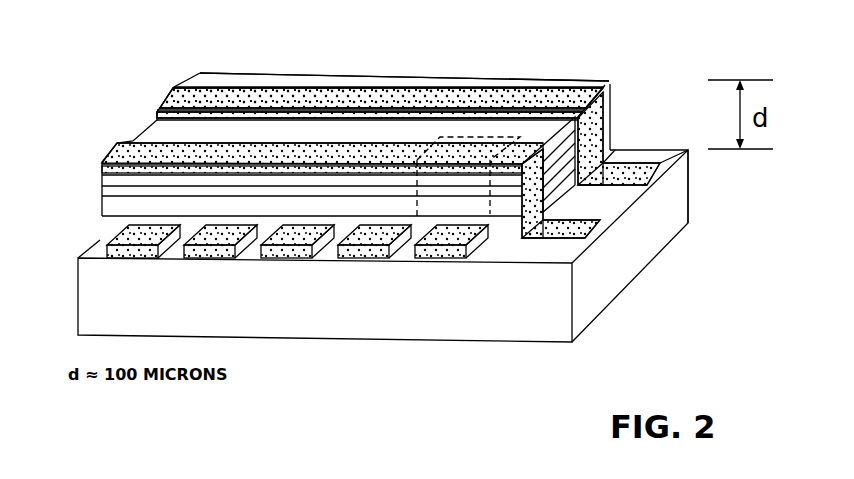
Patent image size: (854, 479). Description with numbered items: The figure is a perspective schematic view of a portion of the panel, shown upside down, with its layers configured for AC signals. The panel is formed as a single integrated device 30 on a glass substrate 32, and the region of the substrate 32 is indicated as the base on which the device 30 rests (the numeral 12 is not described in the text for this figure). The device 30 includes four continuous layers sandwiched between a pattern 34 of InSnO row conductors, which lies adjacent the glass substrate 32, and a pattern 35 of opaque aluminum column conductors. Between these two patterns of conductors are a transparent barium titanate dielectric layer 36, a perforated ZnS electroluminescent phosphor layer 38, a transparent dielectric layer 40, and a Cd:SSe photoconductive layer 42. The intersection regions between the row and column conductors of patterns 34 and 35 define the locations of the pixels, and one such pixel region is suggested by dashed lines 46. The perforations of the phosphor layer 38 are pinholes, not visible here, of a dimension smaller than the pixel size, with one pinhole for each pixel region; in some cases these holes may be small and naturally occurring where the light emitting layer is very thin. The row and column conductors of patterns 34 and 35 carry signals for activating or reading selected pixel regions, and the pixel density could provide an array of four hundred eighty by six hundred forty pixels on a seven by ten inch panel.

The substrate 12 is at (374, 340).
The integrated device 30 is at (673, 60).
The glass substrate 32 is at (689, 183).
The pattern of InSnO row conductors 34 is at (118, 235).
The pattern of opaque aluminum column conductors 35 is at (117, 147).
The transparent barium titanate dielectric layer 36 is at (609, 142).
The perforated ZnS electroluminescent phosphor layer 38 is at (609, 118).
The transparent dielectric layer 40 is at (607, 96).
The Cd:SSe photoconductive layer 42 is at (612, 82).
The dashed lines 46 is at (491, 207).